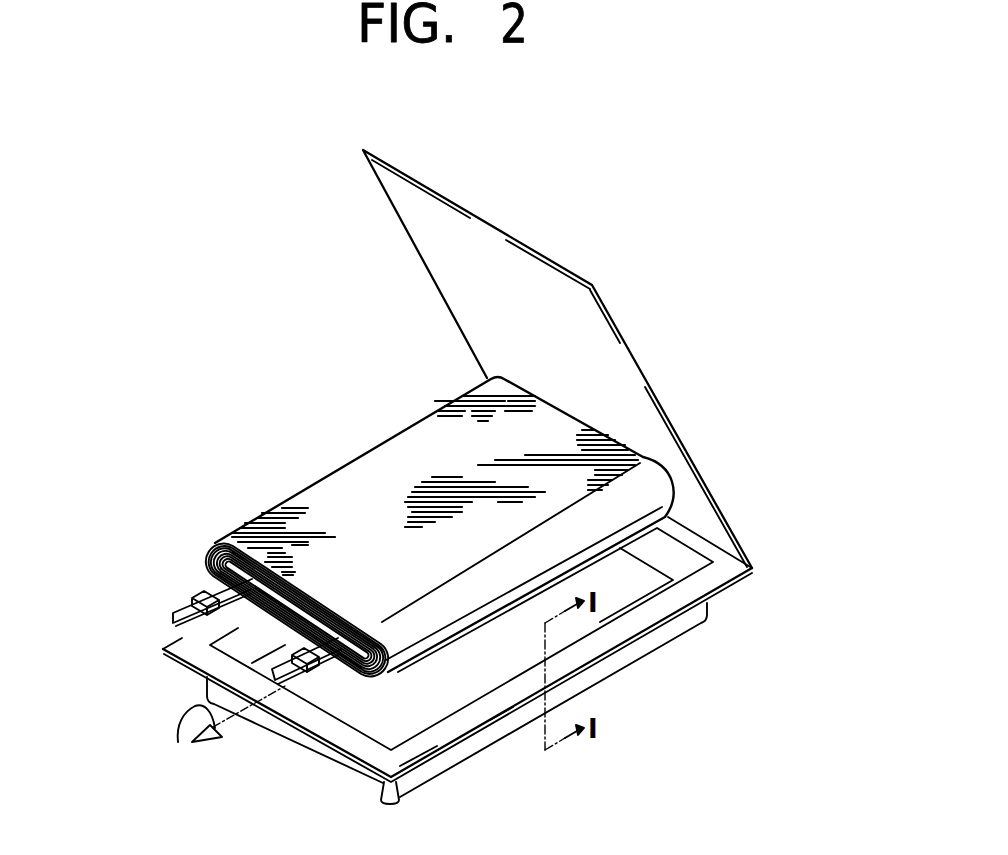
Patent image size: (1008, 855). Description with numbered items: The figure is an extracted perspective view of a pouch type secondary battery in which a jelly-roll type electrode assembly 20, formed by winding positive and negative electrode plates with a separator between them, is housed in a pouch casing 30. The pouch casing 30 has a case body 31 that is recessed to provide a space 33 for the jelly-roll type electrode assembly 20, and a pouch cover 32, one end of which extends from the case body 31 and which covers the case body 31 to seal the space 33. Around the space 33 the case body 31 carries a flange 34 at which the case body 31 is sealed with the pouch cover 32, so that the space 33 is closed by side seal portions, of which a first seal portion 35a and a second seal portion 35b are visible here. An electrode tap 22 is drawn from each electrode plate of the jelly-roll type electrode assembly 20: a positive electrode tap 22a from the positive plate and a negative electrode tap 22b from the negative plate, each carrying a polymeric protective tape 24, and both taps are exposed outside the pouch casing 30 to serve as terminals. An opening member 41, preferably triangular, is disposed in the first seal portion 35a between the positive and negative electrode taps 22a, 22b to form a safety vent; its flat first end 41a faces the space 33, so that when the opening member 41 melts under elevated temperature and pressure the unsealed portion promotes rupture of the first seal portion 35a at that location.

The jelly-roll type electrode assembly 20 is at (360, 482).
The electrode tap 22 is at (60, 606).
The positive electrode tap 22a is at (172, 617).
The negative electrode tap 22b is at (268, 679).
The polymeric protective tape 24 is at (198, 598).
The pouch casing 30 is at (860, 522).
The case body 31 is at (503, 668).
The pouch cover 32 is at (728, 513).
The space 33 is at (460, 699).
The flange 34 is at (622, 632).
The first seal portion 35a is at (292, 731).
The second seal portion 35b is at (603, 664).
The opening member 41 is at (178, 742).
The first end 41a is at (202, 708).